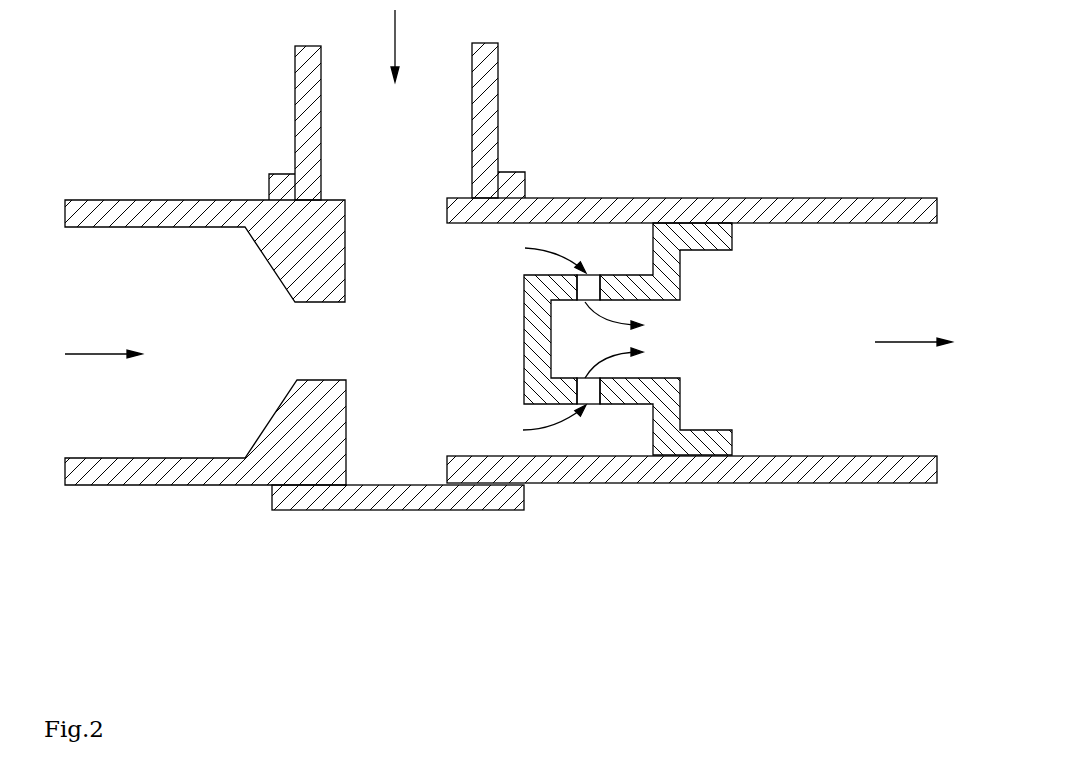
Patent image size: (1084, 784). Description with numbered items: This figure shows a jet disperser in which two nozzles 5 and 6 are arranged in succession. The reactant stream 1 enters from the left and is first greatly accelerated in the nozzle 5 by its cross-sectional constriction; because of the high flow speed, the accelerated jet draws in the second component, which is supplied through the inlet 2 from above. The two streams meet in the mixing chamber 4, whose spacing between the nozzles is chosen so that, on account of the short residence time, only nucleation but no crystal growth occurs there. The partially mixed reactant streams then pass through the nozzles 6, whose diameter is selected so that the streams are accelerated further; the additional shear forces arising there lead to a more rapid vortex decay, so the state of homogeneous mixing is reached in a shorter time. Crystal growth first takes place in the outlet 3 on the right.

The reactant stream 1 is at (103, 335).
The second fluid inlet flow 2 is at (408, 46).
The outlet 3 is at (913, 323).
The mixing chamber 4 is at (420, 352).
The nozzle 5 is at (310, 338).
The nozzles 6 is at (590, 290).